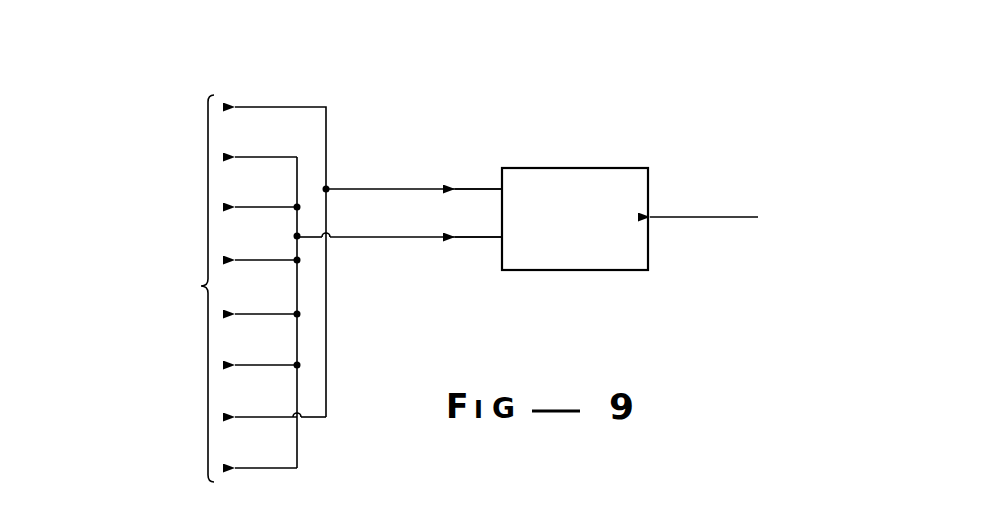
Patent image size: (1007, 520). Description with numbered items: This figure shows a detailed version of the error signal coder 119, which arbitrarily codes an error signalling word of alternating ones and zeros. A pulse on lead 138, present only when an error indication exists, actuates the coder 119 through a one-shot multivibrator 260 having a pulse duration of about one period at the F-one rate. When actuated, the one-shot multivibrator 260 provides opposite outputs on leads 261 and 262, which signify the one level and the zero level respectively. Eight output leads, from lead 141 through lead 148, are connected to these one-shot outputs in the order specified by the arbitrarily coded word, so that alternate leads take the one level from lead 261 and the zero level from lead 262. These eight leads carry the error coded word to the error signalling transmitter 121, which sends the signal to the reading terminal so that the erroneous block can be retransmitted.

The transmitter 121 is at (84, 314).
The error signal coder 119 is at (445, 325).
The lead 141 is at (270, 107).
The lead 148 is at (264, 469).
The lead 261 is at (420, 188).
The lead 262 is at (428, 238).
The one-shot multivibrator 260 is at (592, 251).
The lead 138 is at (700, 215).